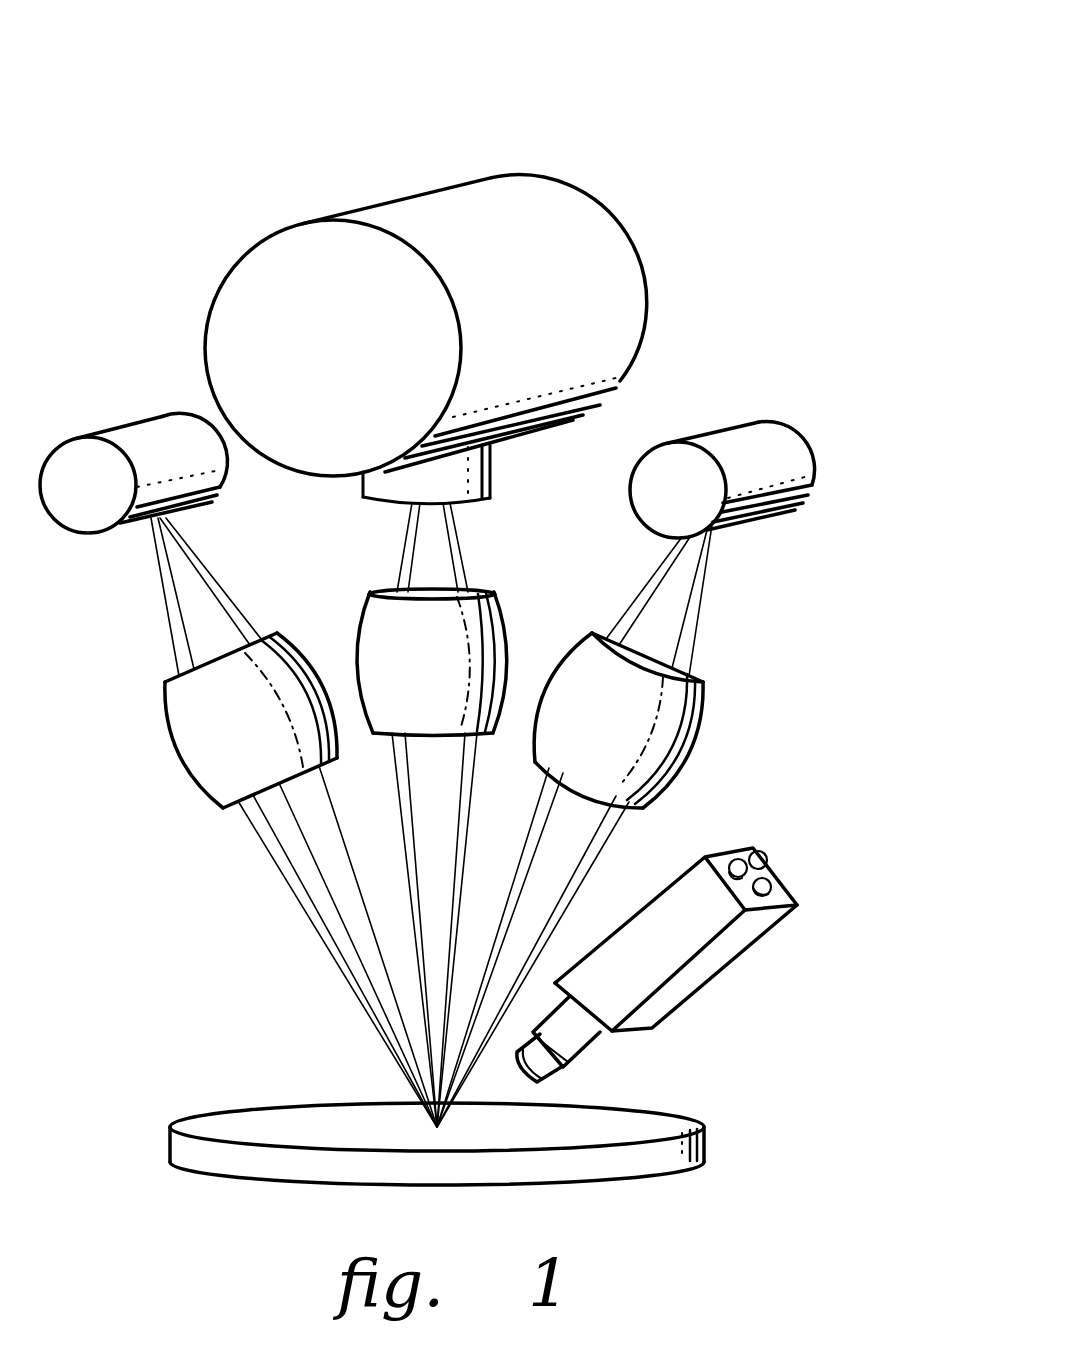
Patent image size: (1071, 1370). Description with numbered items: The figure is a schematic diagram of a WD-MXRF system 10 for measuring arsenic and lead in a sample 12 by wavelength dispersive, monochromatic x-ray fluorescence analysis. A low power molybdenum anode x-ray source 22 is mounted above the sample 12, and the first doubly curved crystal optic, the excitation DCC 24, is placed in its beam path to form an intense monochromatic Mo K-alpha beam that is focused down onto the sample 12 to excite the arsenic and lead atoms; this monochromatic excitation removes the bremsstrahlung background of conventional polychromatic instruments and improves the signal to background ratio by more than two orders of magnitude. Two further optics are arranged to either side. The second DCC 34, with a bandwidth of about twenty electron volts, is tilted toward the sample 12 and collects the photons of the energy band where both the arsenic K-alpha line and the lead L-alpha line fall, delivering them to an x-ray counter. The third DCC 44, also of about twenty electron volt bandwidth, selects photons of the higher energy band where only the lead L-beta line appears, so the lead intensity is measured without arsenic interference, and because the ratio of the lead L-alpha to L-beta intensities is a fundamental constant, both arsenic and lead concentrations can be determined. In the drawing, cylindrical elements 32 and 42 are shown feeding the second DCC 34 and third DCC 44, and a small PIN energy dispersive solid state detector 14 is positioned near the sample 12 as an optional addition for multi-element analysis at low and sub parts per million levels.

The WD-MXRF system 10 is at (719, 136).
The sample 12 is at (640, 1172).
The PIN energy dispersive solid state detector 14 is at (733, 950).
The Mo anode x-ray source 22 is at (407, 197).
The excitation DCC 24 is at (505, 623).
The x-ray source 32 is at (133, 422).
The second DCC 34 is at (178, 743).
The x-ray source 42 is at (743, 423).
The third DCC 44 is at (703, 710).